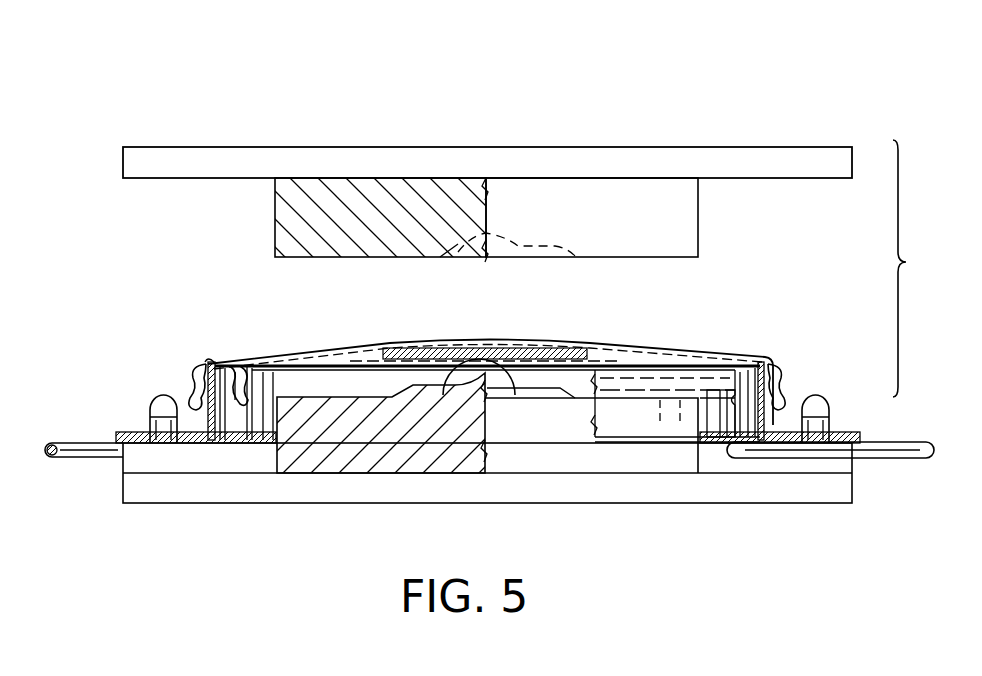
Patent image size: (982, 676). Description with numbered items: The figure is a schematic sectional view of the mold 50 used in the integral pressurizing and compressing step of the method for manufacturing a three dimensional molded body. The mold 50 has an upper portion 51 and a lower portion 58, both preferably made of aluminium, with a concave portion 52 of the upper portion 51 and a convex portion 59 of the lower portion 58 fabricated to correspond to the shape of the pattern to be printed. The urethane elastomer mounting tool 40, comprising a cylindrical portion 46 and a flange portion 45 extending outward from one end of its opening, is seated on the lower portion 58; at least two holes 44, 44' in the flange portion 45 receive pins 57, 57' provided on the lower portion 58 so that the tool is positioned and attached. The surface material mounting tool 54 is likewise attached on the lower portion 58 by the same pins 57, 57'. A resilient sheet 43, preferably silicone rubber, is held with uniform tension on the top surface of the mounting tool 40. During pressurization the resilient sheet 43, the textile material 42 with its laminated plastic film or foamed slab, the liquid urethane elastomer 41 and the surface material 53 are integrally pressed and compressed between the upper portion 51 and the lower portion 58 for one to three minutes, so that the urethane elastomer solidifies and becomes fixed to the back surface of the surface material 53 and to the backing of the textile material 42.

The mold 50 is at (692, 88).
The upper portion 51 is at (766, 147).
The concave portion 52 is at (462, 212).
The lower portion 58 is at (320, 490).
The hole 44 is at (830, 486).
The hole 44' is at (106, 480).
The flange portion 45 is at (205, 443).
The cylindrical portion 46 is at (244, 413).
The textile material 42 is at (597, 387).
The convex portion 59 is at (515, 390).
The resilient sheet 43 is at (333, 362).
The liquid urethane elastomer 41 is at (445, 352).
The surface material 53 is at (645, 343).
The surface material mounting tool 54 is at (772, 392).
The pin 57 is at (842, 397).
The pin 57' is at (131, 388).
The urethane elastomer mounting tool 40 is at (735, 426).